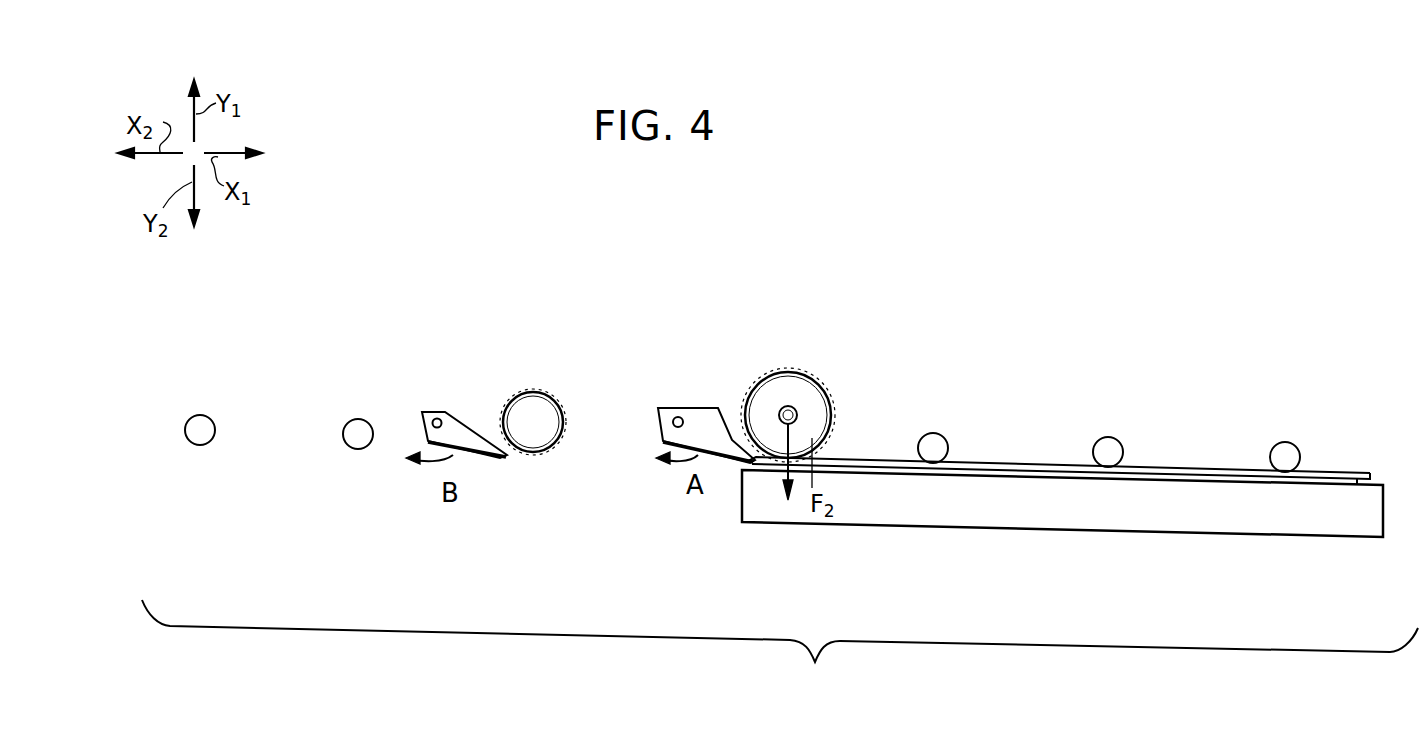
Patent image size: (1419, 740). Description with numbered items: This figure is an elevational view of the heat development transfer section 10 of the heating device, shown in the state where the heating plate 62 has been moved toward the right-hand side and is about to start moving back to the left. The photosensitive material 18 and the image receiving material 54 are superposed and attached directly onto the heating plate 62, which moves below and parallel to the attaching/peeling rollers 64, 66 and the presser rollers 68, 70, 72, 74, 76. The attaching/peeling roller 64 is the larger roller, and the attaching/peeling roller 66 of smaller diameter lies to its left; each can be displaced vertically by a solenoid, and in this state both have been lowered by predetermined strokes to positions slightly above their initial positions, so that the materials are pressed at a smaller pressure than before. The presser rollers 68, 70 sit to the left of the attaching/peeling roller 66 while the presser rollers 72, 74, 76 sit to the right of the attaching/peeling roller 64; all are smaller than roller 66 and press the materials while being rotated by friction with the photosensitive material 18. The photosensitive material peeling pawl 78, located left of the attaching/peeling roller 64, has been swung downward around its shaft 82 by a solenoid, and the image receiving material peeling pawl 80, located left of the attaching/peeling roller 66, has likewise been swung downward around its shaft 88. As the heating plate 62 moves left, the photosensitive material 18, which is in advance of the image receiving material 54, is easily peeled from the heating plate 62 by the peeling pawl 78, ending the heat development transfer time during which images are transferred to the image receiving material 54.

The heat development transfer section 10 is at (1082, 300).
The photosensitive material 18 is at (1167, 468).
The image receiving material 54 is at (1176, 482).
The heating plate 62 is at (1353, 538).
The attaching/peeling roller 64 is at (770, 372).
The attaching/peeling roller 66 is at (549, 394).
The presser roller 68 is at (362, 420).
The presser roller 70 is at (200, 415).
The presser roller 72 is at (942, 434).
The presser roller 74 is at (1112, 438).
The presser roller 76 is at (1288, 443).
The photosensitive material peeling pawl 78 is at (701, 408).
The image receiving material peeling pawl 80 is at (464, 424).
The shaft 82 is at (678, 417).
The shaft 88 is at (437, 418).